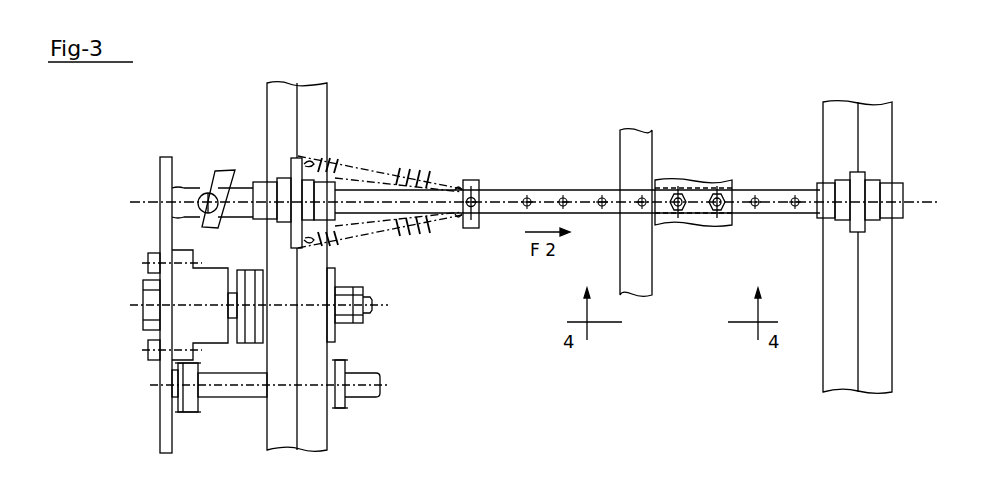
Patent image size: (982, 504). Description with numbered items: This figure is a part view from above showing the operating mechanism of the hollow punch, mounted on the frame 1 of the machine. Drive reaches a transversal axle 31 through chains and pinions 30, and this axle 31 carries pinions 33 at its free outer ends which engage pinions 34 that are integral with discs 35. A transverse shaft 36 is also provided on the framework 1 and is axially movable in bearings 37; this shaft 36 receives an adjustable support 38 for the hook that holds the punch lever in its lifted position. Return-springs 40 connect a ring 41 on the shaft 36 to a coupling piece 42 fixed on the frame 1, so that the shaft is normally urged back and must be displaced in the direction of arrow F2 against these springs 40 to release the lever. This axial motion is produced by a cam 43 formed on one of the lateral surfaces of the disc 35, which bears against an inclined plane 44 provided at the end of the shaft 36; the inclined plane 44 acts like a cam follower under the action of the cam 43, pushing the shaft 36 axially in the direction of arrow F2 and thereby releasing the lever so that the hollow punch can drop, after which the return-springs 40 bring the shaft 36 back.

The frame 1 is at (317, 430).
The pinions 30 is at (347, 368).
The transversal axle 31 is at (360, 390).
The pinions 33 is at (188, 405).
The pinions 34 is at (147, 358).
The discs 35 is at (160, 407).
The transverse shaft 36 is at (537, 195).
The bearings 37 is at (330, 187).
The adjustable support 38 is at (705, 190).
The return-springs 40 is at (423, 172).
The ring 41 is at (468, 187).
The coupling piece 42 is at (297, 160).
The cam 43 is at (202, 193).
The inclined plane 44 is at (222, 175).